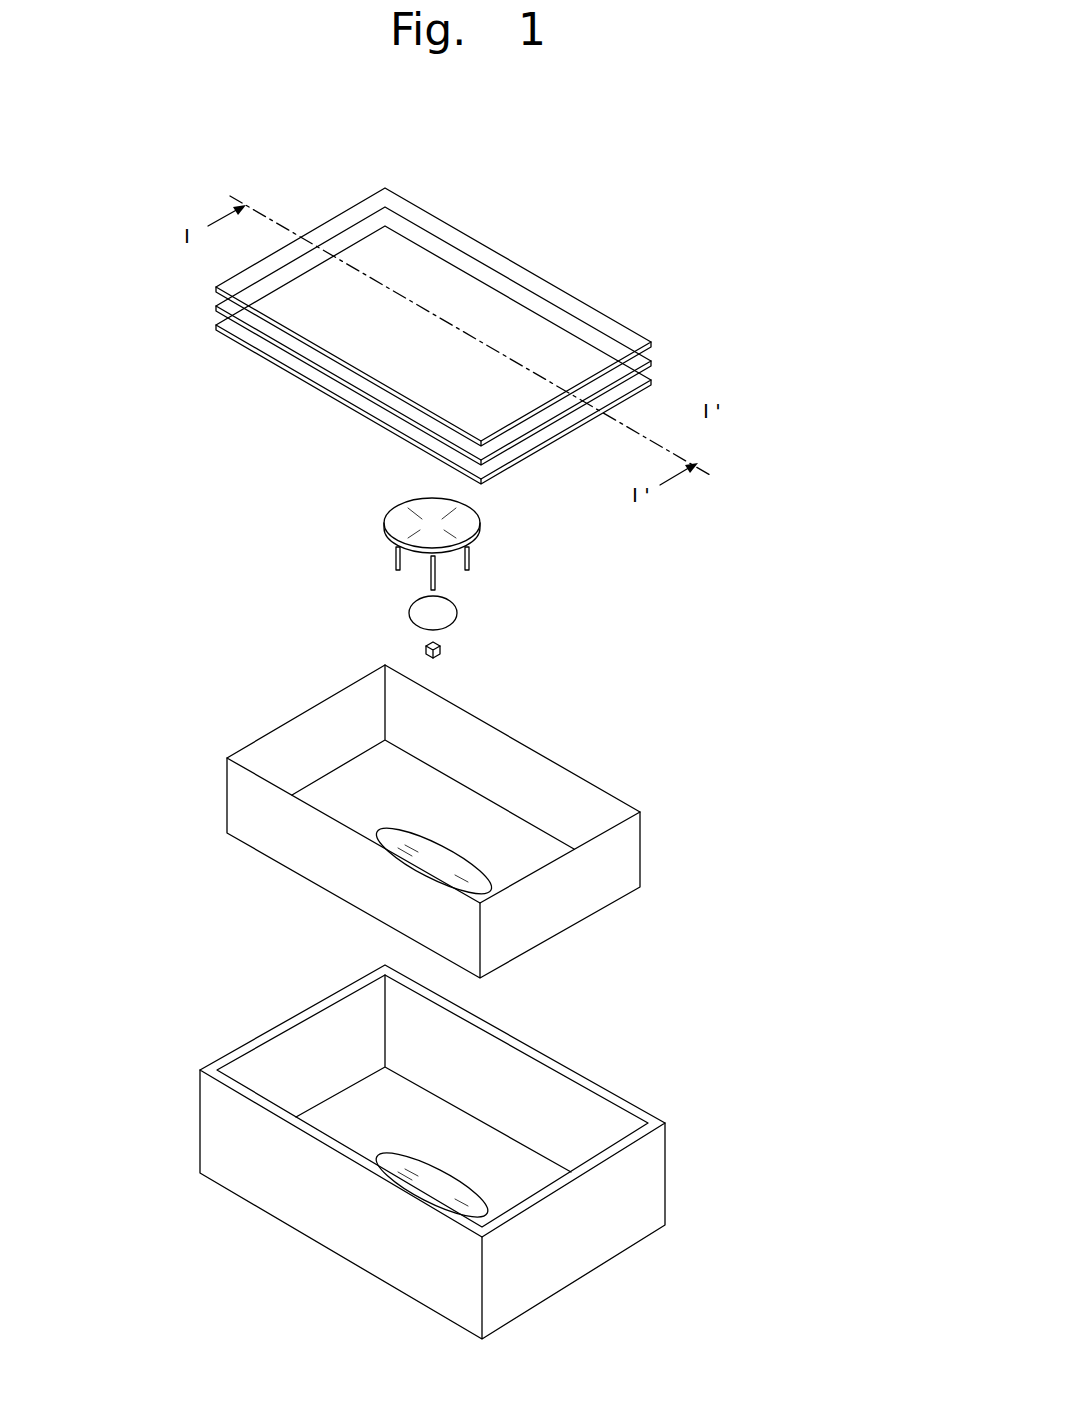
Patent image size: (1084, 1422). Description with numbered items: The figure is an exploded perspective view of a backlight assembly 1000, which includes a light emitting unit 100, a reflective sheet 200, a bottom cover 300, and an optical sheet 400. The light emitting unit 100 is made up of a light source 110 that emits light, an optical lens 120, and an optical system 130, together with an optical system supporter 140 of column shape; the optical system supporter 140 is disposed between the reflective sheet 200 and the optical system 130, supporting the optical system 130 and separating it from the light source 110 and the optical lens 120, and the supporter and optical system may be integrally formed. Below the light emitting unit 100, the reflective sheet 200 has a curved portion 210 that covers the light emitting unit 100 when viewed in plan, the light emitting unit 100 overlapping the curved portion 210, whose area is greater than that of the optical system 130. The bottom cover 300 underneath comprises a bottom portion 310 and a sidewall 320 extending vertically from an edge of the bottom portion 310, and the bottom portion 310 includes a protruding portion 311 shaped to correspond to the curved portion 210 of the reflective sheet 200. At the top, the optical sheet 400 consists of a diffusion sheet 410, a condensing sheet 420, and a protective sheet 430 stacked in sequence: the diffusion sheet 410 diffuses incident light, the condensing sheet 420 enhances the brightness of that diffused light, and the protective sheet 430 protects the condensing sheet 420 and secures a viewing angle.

The backlight assembly 1000 is at (714, 196).
The optical sheet 400 is at (505, 336).
The protective sheet 430 is at (655, 344).
The condensing sheet 420 is at (655, 363).
The diffusion sheet 410 is at (655, 382).
The light emitting unit 100 is at (501, 581).
The optical system 130 is at (481, 530).
The optical system supporter 140 is at (471, 561).
The optical lens 120 is at (458, 609).
The light source 110 is at (494, 653).
The reflective sheet 200 is at (482, 821).
The curved portion 210 is at (446, 848).
The bottom cover 300 is at (501, 1152).
The sidewall 320 is at (588, 1130).
The bottom portion 310 is at (508, 1190).
The protruding portion 311 is at (445, 1173).